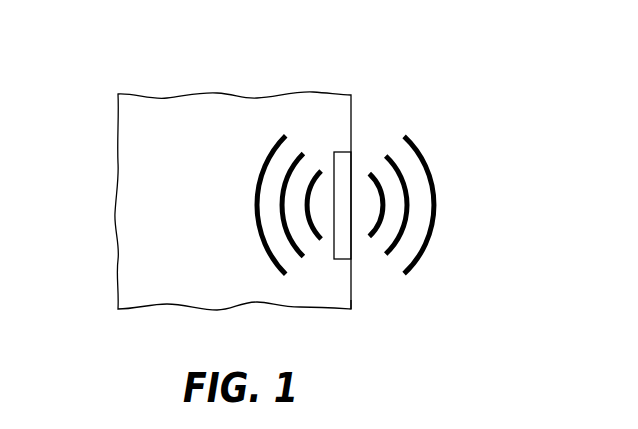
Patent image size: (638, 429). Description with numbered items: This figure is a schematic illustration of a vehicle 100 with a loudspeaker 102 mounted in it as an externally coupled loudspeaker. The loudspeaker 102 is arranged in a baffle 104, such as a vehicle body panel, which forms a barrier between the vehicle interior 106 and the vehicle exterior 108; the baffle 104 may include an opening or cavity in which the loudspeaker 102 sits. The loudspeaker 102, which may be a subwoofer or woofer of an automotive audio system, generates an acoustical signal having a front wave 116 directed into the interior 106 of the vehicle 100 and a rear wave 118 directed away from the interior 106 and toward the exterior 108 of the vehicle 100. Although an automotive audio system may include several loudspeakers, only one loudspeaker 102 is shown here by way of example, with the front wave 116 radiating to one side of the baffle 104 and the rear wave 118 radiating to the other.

The vehicle 100 is at (368, 60).
The loudspeaker 102 is at (358, 248).
The baffle 104 is at (351, 280).
The vehicle interior 106 is at (162, 187).
The vehicle exterior 108 is at (459, 117).
The front wave 116 is at (255, 207).
The rear wave 118 is at (435, 202).